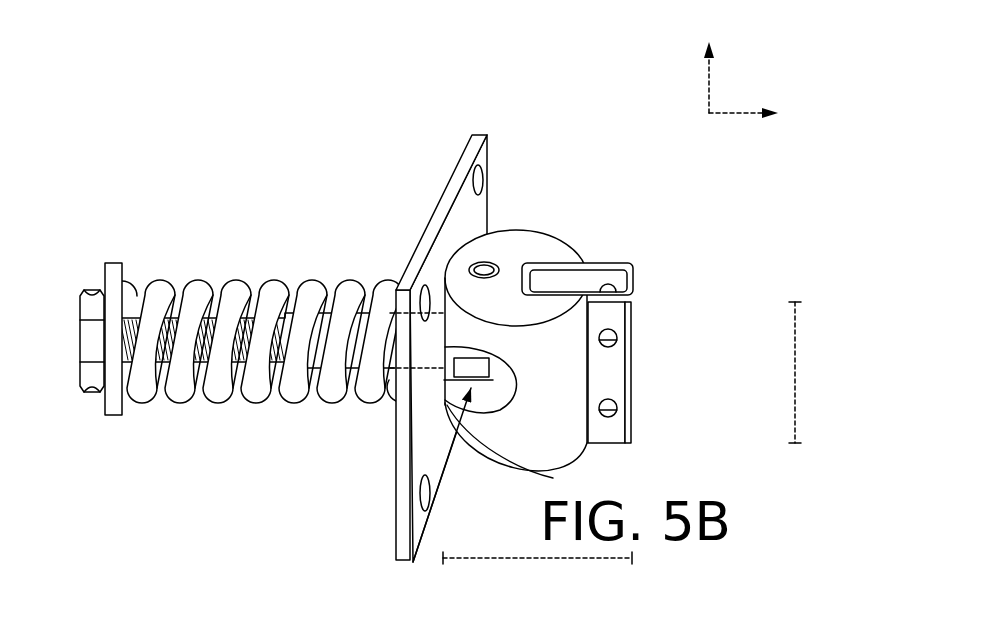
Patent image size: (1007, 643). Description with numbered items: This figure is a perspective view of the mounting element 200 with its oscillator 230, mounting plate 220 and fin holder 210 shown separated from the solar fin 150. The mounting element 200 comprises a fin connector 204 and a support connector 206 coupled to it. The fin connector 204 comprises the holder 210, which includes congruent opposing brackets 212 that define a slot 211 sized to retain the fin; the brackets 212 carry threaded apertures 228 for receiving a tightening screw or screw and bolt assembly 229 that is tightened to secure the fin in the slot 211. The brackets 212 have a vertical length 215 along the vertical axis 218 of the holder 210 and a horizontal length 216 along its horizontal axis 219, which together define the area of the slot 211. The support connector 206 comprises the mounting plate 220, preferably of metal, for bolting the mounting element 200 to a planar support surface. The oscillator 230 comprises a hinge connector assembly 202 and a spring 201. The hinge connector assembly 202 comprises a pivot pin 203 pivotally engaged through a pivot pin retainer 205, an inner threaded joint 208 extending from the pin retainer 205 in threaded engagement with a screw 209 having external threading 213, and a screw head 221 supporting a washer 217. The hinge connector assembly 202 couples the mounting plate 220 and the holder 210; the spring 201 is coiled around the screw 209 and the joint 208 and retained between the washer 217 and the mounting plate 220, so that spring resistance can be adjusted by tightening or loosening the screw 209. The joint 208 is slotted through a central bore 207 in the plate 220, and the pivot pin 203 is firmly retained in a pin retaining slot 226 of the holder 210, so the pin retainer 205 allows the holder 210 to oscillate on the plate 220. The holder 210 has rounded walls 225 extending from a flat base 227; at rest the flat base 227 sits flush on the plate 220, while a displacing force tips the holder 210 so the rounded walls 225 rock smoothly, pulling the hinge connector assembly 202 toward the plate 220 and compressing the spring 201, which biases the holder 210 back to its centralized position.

The solar fin 150 is at (506, 97).
The mounting element 200 is at (507, 132).
The spring 201 is at (348, 279).
The hinge connector assembly 202 is at (145, 403).
The pivot pin 203 is at (482, 260).
The fin connector 204 is at (573, 224).
The pivot pin retainer 205 is at (519, 444).
The support connector 206 is at (394, 490).
The central bore 207 is at (449, 374).
The inner threaded joint 208 is at (313, 372).
The screw 209 is at (239, 363).
The holder 210 is at (648, 247).
The slot 211 is at (535, 287).
The brackets 212 is at (568, 259).
The external threading 213 is at (212, 316).
The vertical length 215 is at (798, 357).
The horizontal length 216 is at (527, 562).
The washer 217 is at (112, 263).
The vertical axis 218 is at (707, 70).
The horizontal axis 219 is at (745, 116).
The mounting plate 220 is at (478, 130).
The screw head 221 is at (77, 347).
The rounded walls 225 is at (531, 225).
The pin retaining slot 226 is at (504, 259).
The flat base 227 is at (451, 268).
The threaded apertures 228 is at (613, 291).
The screw and bolt assembly 229 is at (624, 408).
The oscillator 230 is at (253, 191).